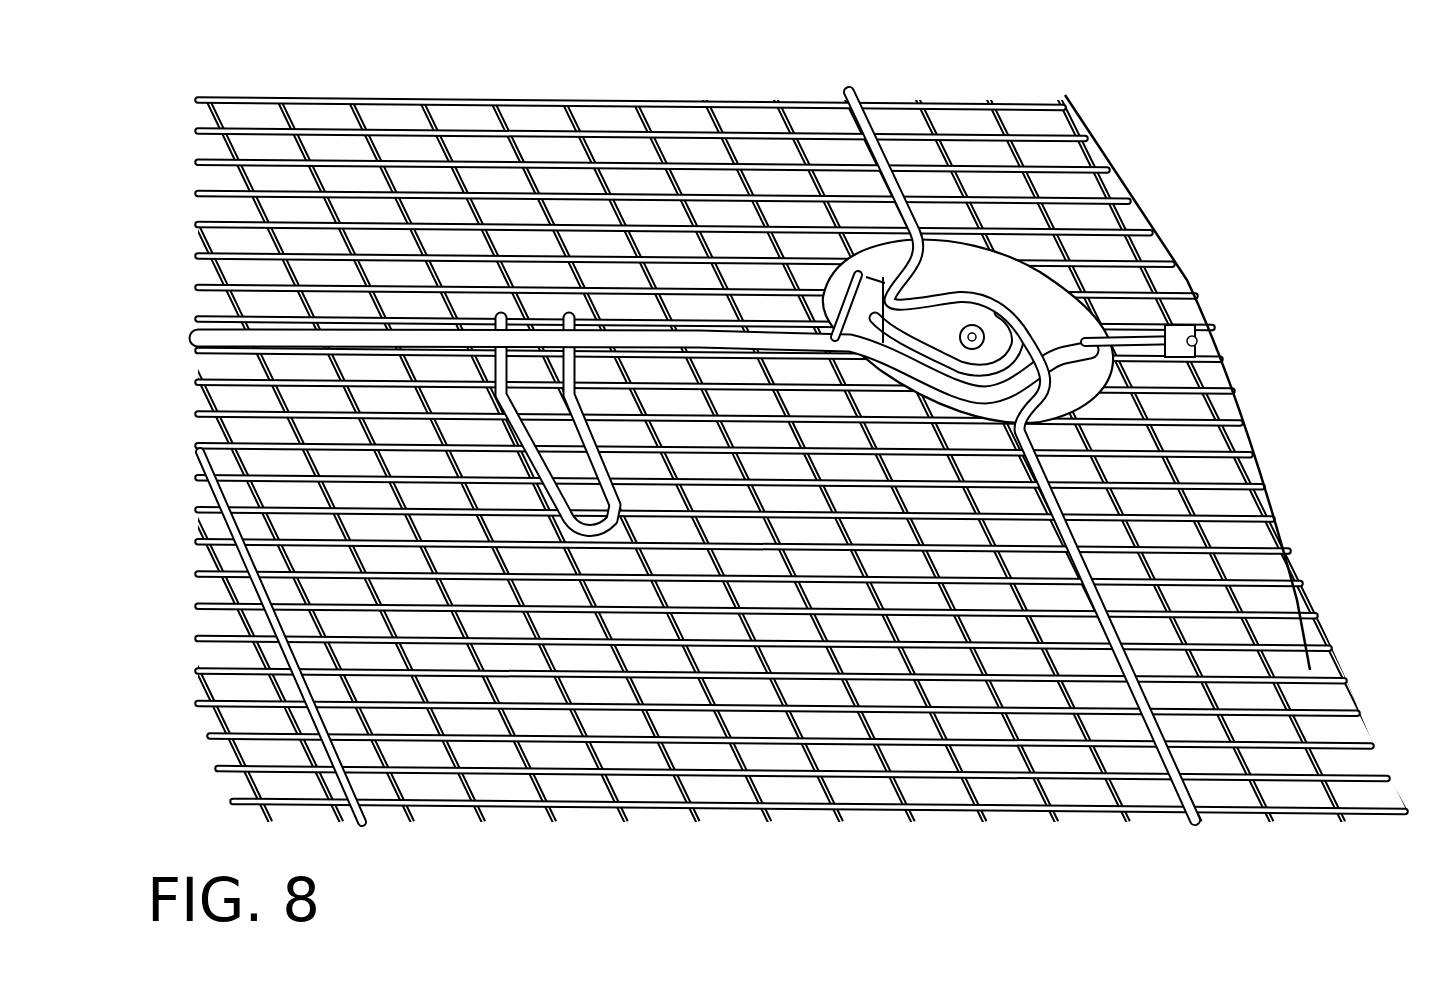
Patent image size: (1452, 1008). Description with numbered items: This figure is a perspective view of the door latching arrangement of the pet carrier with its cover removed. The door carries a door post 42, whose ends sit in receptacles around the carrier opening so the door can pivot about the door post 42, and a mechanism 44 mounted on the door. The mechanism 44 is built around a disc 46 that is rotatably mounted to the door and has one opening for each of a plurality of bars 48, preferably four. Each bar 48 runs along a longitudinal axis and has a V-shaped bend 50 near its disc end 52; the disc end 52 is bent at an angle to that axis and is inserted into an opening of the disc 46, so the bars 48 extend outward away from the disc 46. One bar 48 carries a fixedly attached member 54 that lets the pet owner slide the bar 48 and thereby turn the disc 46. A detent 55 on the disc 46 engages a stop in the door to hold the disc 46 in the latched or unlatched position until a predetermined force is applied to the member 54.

The door post 42 is at (340, 753).
The mechanism 44 is at (1080, 258).
The disc 46 is at (980, 287).
The bars 48 is at (903, 190).
The V-shaped bend 50 is at (1075, 383).
The disc end 52 is at (972, 352).
The member 54 is at (610, 542).
The detent 55 is at (834, 283).